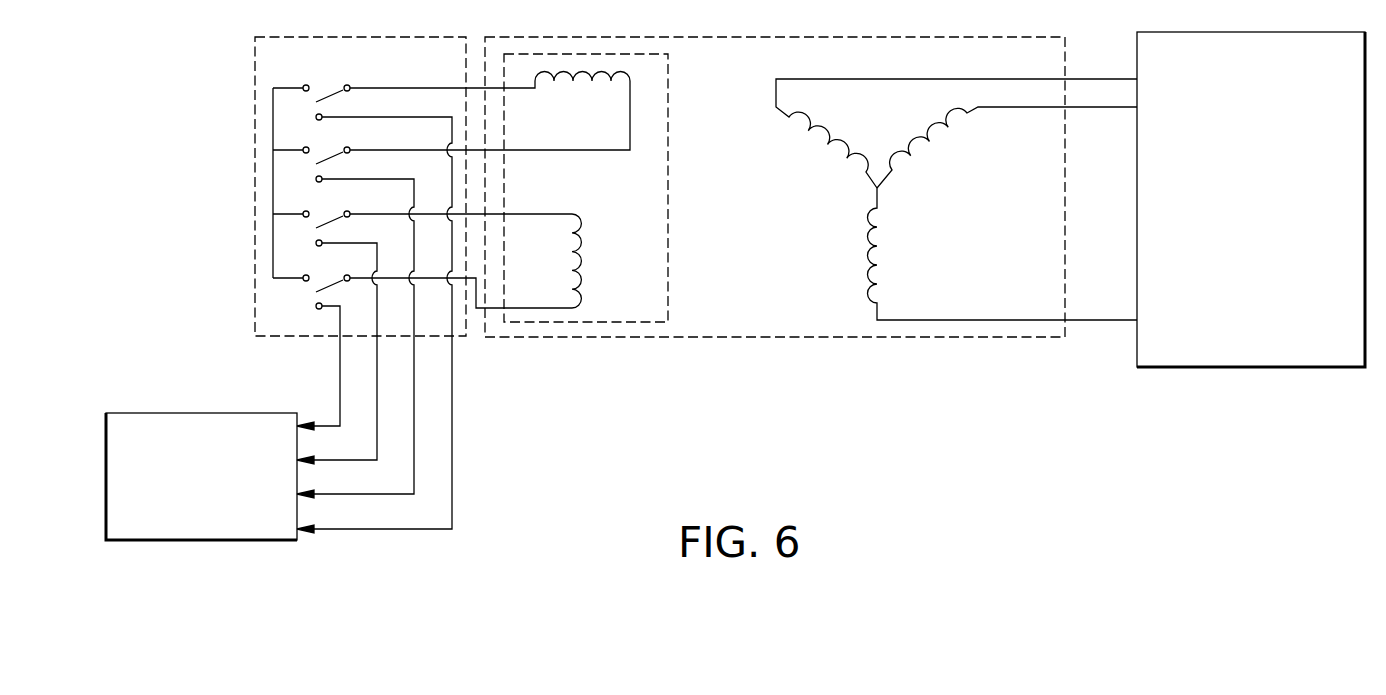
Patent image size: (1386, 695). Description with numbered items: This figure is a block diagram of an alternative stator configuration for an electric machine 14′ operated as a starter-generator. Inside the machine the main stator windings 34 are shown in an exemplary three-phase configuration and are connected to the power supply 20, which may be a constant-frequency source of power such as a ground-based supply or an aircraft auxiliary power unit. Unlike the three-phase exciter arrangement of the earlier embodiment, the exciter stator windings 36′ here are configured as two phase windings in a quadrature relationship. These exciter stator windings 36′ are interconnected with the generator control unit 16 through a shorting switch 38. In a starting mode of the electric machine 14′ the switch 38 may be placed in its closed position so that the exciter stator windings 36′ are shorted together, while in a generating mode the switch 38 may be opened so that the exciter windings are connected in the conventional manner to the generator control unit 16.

The electric machine 14′ is at (918, 337).
The generator control unit 16 is at (198, 540).
The power supply 20 is at (1250, 367).
The main stator windings 34 is at (868, 213).
The exciter stator windings 36′ is at (668, 140).
The shorting switch 38 is at (255, 94).